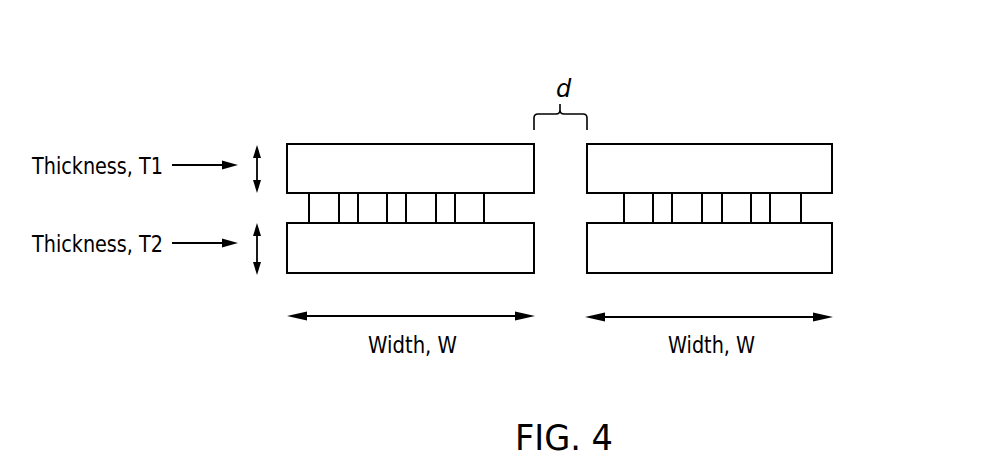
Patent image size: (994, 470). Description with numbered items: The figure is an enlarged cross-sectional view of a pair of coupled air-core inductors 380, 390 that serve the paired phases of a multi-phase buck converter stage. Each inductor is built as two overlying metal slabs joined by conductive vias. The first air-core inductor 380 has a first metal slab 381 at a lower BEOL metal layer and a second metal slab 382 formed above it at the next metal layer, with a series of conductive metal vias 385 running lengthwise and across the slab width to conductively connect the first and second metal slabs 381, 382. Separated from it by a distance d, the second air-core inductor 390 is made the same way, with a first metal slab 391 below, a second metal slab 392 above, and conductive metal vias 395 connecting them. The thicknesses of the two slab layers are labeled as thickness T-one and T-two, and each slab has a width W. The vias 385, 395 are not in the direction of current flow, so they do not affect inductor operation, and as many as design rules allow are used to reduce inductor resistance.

The first air-core inductor 380 is at (459, 116).
The first metal slab 381 is at (308, 260).
The second metal slab 382 is at (305, 157).
The conductive metal vias 385 is at (473, 203).
The second air-core inductor 390 is at (658, 116).
The first metal slab 391 is at (812, 260).
The second metal slab 392 is at (813, 157).
The conductive metal vias 395 is at (822, 208).